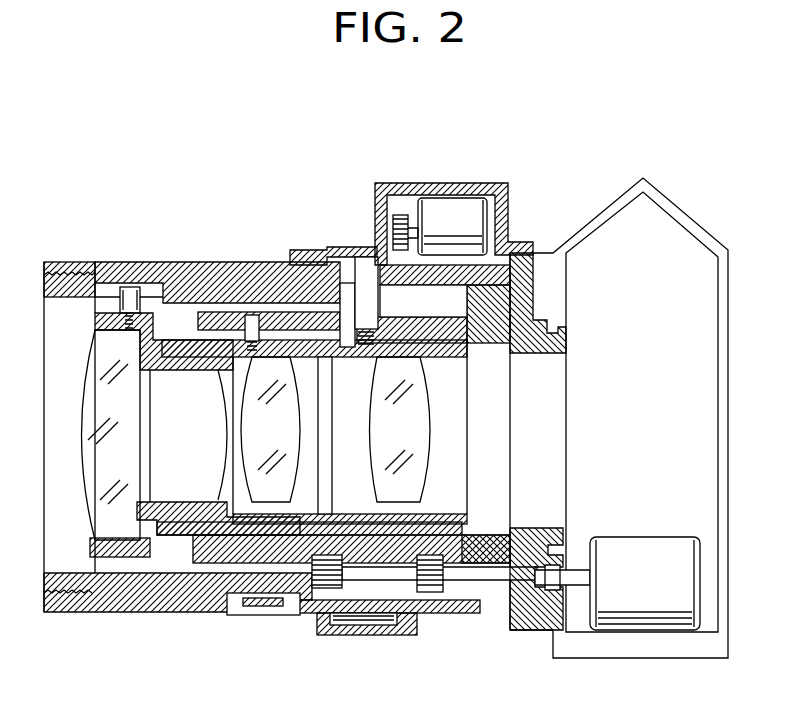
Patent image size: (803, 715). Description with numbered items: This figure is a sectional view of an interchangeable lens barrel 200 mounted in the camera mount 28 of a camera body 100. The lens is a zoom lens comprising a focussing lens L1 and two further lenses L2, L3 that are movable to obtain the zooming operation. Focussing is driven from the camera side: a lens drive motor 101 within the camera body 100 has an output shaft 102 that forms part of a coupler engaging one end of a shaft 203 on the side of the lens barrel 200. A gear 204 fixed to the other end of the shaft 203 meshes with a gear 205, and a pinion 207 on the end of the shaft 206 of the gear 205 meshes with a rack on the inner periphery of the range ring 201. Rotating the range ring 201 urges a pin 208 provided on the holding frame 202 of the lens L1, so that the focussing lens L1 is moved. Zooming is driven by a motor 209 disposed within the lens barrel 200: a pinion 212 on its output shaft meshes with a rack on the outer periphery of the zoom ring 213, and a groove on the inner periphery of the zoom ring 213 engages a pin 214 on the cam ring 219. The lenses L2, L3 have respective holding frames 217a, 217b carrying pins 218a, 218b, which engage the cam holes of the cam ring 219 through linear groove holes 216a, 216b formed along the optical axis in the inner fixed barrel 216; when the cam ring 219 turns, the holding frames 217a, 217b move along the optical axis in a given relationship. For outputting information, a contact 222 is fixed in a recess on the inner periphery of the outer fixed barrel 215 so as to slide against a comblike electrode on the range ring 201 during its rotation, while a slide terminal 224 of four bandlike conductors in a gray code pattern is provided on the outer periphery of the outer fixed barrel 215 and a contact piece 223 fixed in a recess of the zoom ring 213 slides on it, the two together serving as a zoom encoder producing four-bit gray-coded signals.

The camera body 100 is at (658, 658).
The lens drive motor 101 is at (655, 545).
The output shaft 102 is at (578, 580).
The interchangeable lens barrel 200 is at (118, 614).
The range ring 201 is at (183, 278).
The holding frame 202 is at (140, 365).
The shaft 203 is at (513, 577).
The gear 204 is at (433, 592).
The gear 205 is at (445, 560).
The shaft 206 is at (387, 543).
The pinion 207 is at (330, 484).
The pin 208 is at (127, 290).
The motor 209 is at (458, 200).
The pinion 212 is at (398, 215).
The zoom ring 213 is at (312, 268).
The pin 214 is at (372, 295).
The outer fixed barrel 215 is at (213, 266).
The inner fixed barrel 216 is at (476, 345).
The linear groove hole 216a is at (243, 358).
The linear groove hole 216b is at (337, 340).
The holding frame 217a is at (180, 370).
The holding frame 217b is at (503, 382).
The pin 218a is at (258, 303).
The pin 218b is at (352, 303).
The cam ring 219 is at (248, 318).
The contact 222 is at (247, 606).
The contact piece 223 is at (385, 631).
The slide terminal 224 is at (345, 626).
The camera mount 28 is at (533, 282).
The focussing lens L1 is at (88, 510).
The lens L2 is at (347, 492).
The lens L3 is at (425, 475).